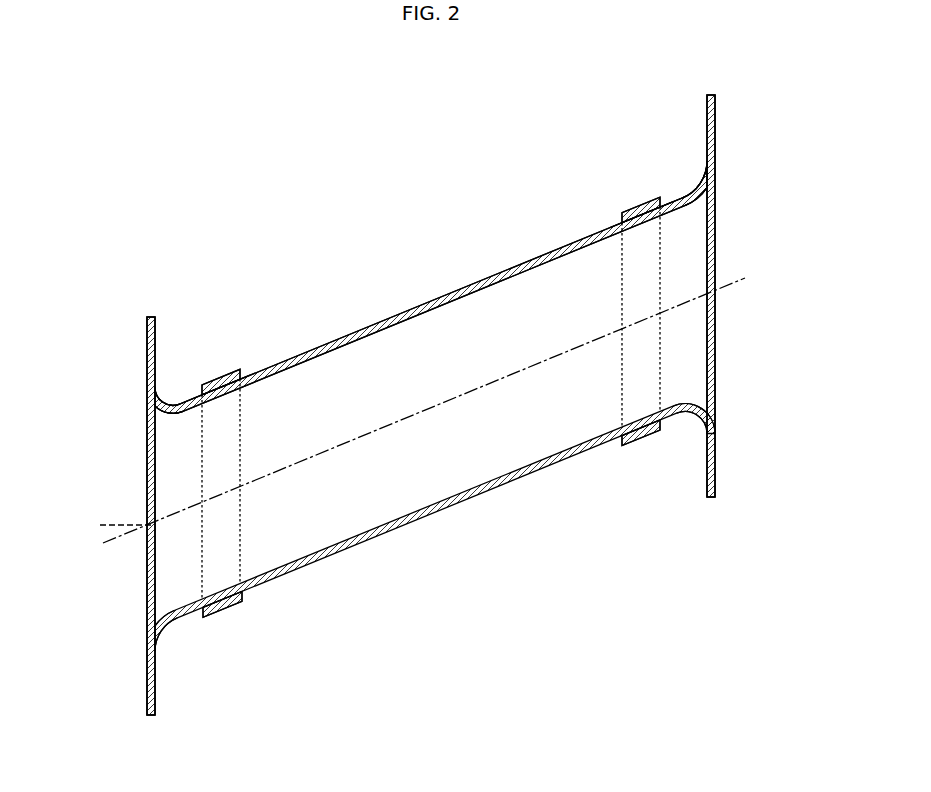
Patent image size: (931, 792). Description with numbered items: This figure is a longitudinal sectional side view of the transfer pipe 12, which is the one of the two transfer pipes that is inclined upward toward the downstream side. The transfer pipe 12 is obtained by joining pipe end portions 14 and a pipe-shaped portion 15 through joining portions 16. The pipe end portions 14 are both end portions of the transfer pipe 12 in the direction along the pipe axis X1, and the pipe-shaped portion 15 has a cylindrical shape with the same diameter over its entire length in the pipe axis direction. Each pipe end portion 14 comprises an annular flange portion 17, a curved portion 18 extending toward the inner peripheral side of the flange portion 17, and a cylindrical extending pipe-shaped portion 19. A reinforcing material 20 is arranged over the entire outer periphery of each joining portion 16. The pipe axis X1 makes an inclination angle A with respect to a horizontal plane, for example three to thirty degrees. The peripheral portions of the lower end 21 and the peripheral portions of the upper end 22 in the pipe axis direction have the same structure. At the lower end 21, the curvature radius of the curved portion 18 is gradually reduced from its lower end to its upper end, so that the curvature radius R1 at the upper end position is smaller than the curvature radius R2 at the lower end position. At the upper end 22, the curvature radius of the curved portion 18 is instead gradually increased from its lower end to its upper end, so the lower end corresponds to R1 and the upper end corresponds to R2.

The transfer pipe 12 is at (324, 199).
The pipe end portion 14 is at (183, 338).
The pipe-shaped portion 15 is at (397, 309).
The joining portion 16 is at (224, 399).
The flange portion 17 is at (146, 349).
The curved portion 18 is at (158, 412).
The extending pipe-shaped portion 19 is at (190, 413).
The reinforcing material 20 is at (214, 386).
The lower end 21 is at (146, 588).
The upper end 22 is at (717, 347).
The curvature radius at the upper end position of the curved portion R1 is at (164, 398).
The curvature radius at the lower end position of the curved portion R2 is at (697, 178).
The pipe axis X1 is at (741, 281).
The inclination angle A is at (107, 507).